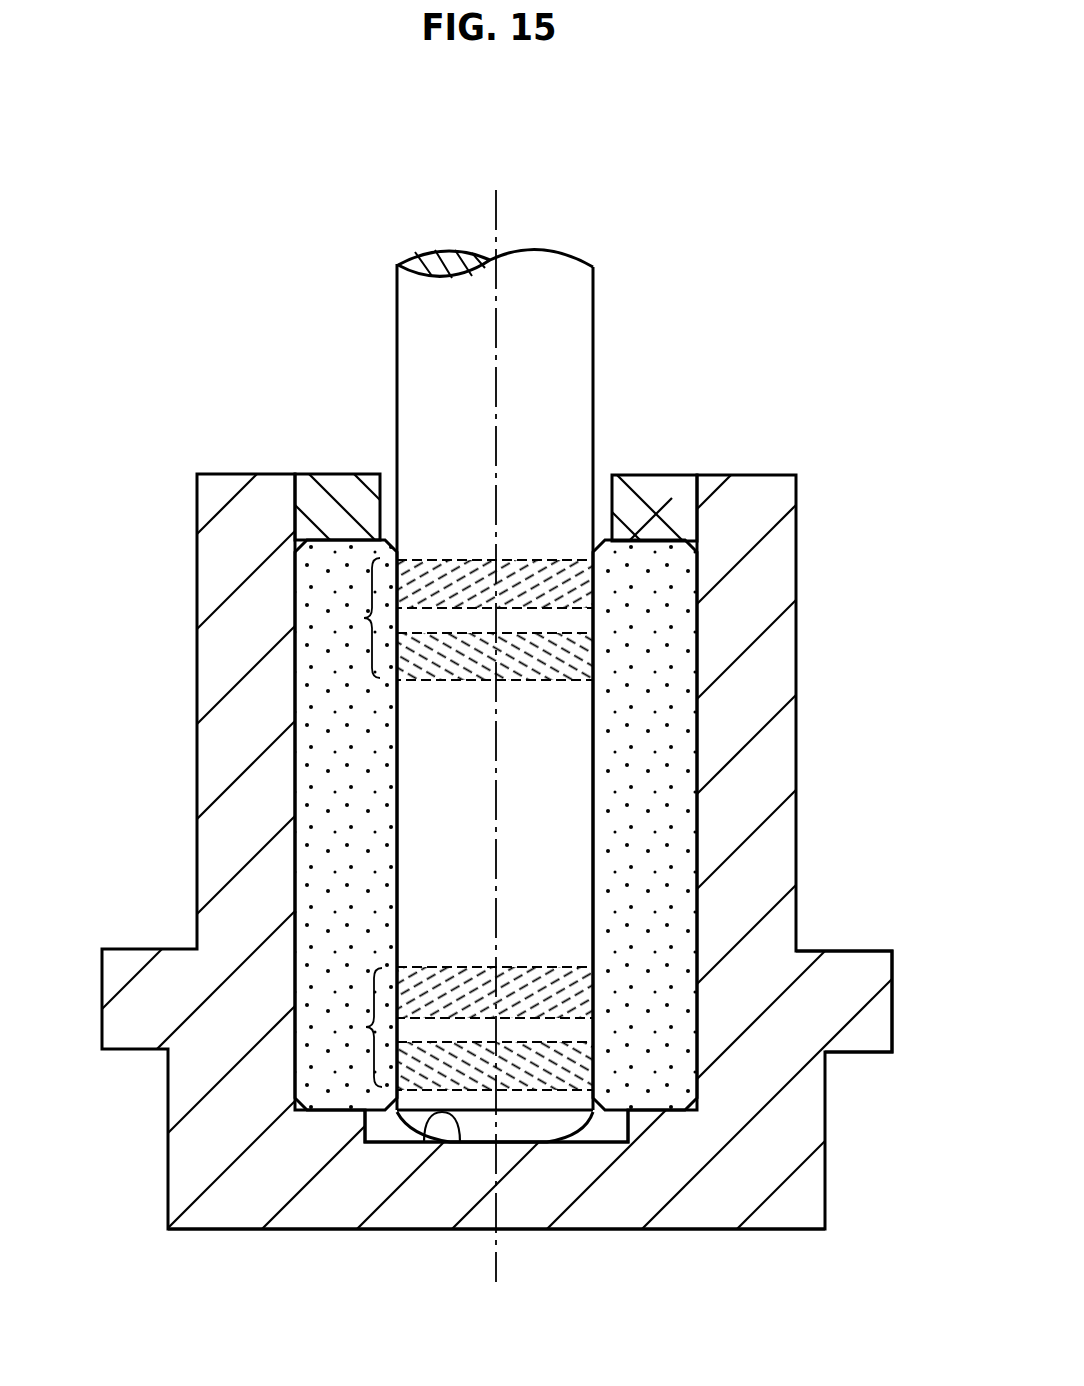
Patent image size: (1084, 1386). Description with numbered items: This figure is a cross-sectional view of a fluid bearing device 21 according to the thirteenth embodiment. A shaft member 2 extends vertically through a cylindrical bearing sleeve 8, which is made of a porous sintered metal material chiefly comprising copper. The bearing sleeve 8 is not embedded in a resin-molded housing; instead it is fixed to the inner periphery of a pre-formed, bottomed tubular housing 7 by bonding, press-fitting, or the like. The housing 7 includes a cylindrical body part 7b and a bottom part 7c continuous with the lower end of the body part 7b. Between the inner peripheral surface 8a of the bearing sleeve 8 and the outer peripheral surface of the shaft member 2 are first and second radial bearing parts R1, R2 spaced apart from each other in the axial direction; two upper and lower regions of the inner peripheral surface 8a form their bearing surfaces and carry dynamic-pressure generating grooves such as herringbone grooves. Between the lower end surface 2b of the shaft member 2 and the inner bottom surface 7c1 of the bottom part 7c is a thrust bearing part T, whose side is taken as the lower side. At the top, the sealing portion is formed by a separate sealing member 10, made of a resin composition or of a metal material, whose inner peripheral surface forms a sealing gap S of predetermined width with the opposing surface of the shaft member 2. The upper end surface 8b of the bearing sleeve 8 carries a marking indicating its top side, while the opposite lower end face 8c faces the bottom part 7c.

The shaft member 2 is at (595, 262).
The lower end surface 2b is at (598, 1126).
The fluid bearing device 21 is at (807, 427).
The housing 7 is at (803, 667).
The body part 7b is at (770, 927).
The bottom part 7c is at (405, 1213).
The inner bottom surface 7c1 is at (467, 1147).
The bearing sleeve 8 is at (668, 869).
The inner peripheral surface 8a is at (597, 775).
The upper end surface 8b is at (614, 518).
The bearing lower end face 8c is at (342, 1113).
The sealing member 10 is at (672, 498).
The sealing gap S is at (600, 498).
The first radial bearing part R1 is at (357, 620).
The second radial bearing part R2 is at (360, 1028).
The thrust bearing part T is at (562, 1150).